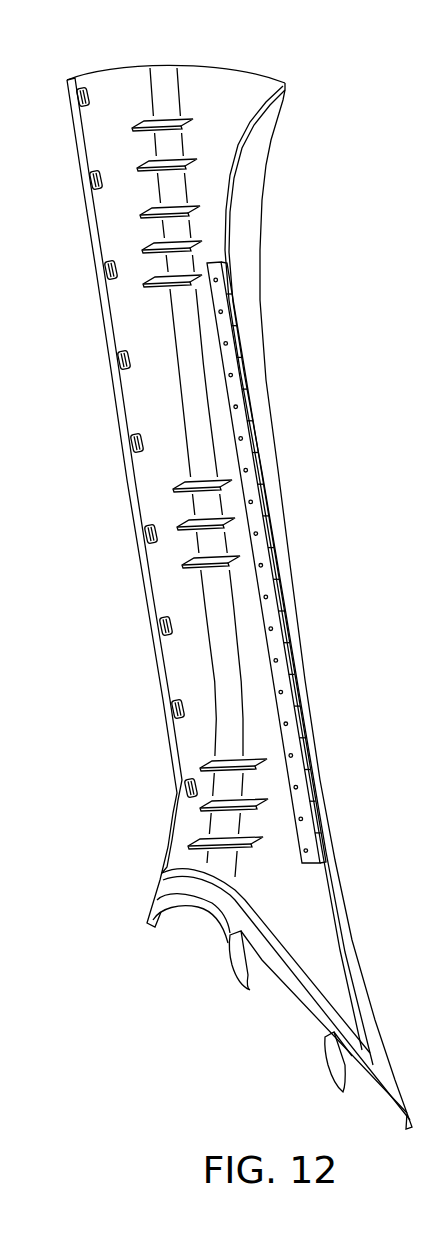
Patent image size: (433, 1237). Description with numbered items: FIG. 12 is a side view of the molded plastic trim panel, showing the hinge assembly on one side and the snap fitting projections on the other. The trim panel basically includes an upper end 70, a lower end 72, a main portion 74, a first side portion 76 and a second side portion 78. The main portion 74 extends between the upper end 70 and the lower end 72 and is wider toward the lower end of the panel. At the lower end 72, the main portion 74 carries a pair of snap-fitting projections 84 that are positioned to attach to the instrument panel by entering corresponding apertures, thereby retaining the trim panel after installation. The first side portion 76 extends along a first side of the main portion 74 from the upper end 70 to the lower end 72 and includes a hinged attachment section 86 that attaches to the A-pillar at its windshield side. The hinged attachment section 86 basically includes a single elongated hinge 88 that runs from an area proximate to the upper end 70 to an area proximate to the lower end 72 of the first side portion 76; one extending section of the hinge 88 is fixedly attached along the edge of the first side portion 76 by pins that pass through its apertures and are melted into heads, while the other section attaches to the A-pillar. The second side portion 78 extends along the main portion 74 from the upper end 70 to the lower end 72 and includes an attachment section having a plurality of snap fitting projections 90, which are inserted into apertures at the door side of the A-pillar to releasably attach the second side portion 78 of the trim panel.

The upper end 70 is at (227, 68).
The lower end 72 is at (200, 910).
The main portion 74 is at (165, 80).
The first side portion 76 is at (260, 131).
The second side portion 78 is at (113, 92).
The snap-fitting projection 84 is at (235, 977).
The hinged attachment section 86 is at (313, 649).
The single elongated hinge 88 is at (210, 254).
The snap fitting projections 90 is at (78, 99).